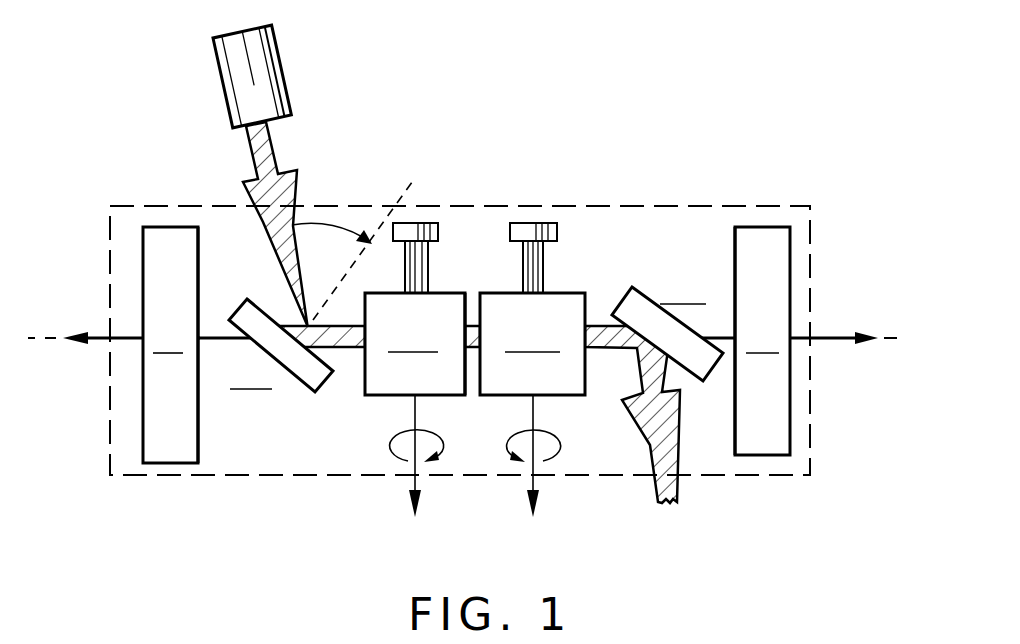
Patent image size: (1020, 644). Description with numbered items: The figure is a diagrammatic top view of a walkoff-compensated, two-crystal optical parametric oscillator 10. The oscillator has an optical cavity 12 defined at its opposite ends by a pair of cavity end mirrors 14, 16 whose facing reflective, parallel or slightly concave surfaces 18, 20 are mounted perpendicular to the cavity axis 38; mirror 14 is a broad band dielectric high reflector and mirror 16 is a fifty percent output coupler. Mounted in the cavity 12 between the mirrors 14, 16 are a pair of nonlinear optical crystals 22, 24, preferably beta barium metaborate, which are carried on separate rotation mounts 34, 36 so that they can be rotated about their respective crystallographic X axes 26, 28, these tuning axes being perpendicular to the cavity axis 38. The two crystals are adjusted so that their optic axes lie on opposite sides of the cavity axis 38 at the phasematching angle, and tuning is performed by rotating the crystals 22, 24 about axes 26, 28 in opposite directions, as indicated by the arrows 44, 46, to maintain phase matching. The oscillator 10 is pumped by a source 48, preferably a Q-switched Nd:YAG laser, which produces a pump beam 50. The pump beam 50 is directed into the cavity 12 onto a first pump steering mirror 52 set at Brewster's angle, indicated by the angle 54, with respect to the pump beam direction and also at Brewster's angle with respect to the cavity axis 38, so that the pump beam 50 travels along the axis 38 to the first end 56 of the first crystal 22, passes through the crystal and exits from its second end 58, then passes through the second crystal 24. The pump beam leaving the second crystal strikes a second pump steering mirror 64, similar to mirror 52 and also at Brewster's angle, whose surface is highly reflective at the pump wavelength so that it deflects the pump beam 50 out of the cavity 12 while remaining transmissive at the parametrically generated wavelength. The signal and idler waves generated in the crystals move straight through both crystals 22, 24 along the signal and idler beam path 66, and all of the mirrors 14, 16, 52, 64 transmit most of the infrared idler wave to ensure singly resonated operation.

The optical parametric oscillator 10 is at (508, 199).
The optical cavity 12 is at (693, 205).
The cavity end mirror 14 is at (170, 450).
The cavity end mirror 16 is at (765, 450).
The reflective surface 18 is at (199, 426).
The reflective surface 20 is at (735, 427).
The first nonlinear optical crystal 22 is at (443, 293).
The second nonlinear optical crystal 24 is at (559, 293).
The crystallographic X axis 26 is at (414, 411).
The crystallographic X axis 28 is at (534, 413).
The rotation mount 34 is at (430, 256).
The rotation mount 36 is at (545, 258).
The cavity axis 38 is at (50, 337).
The arrow 44 is at (436, 432).
The arrow 46 is at (527, 432).
The source 48 is at (292, 70).
The pump beam 50 is at (279, 163).
The first pump steering mirror 52 is at (253, 300).
The angle 54 is at (320, 224).
The first end 56 is at (364, 383).
The second end 58 is at (467, 393).
The second pump steering mirror 64 is at (703, 383).
The signal and idler beam path 66 is at (826, 337).